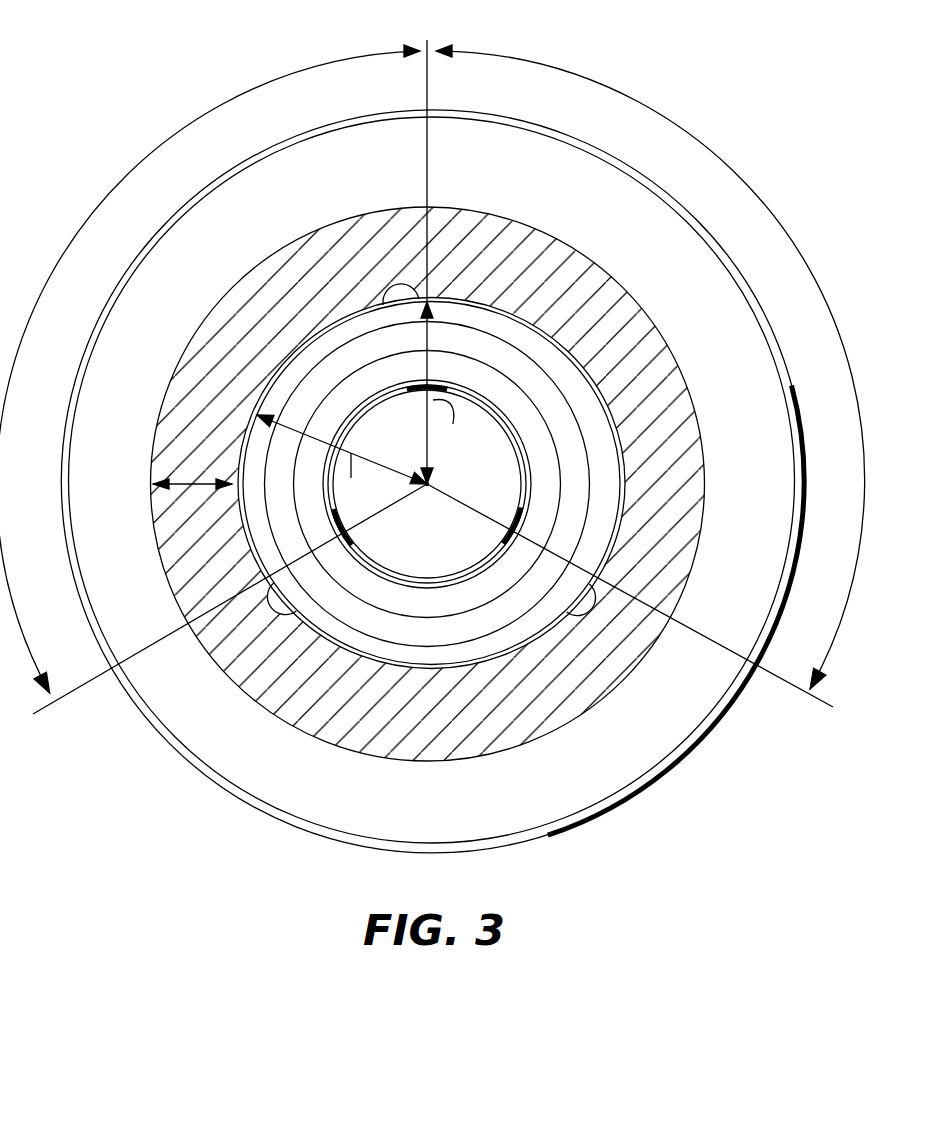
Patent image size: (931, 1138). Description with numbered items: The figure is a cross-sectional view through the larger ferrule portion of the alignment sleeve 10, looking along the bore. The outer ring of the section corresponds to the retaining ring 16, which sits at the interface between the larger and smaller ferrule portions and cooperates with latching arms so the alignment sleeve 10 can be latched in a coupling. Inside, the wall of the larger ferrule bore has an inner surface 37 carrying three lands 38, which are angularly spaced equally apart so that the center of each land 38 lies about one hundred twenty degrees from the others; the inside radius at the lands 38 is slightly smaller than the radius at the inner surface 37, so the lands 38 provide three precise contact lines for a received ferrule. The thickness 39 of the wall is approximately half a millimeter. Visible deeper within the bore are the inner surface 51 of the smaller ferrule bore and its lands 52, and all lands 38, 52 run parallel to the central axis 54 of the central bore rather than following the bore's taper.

The alignment sleeve 10 is at (679, 42).
The retaining ring 16 is at (603, 822).
The inner surface 37 is at (298, 360).
The lands 38 is at (387, 300).
The thickness 39 is at (188, 483).
The inner surface 51 is at (415, 572).
The lands 52 is at (426, 393).
The central axis 54 is at (426, 487).